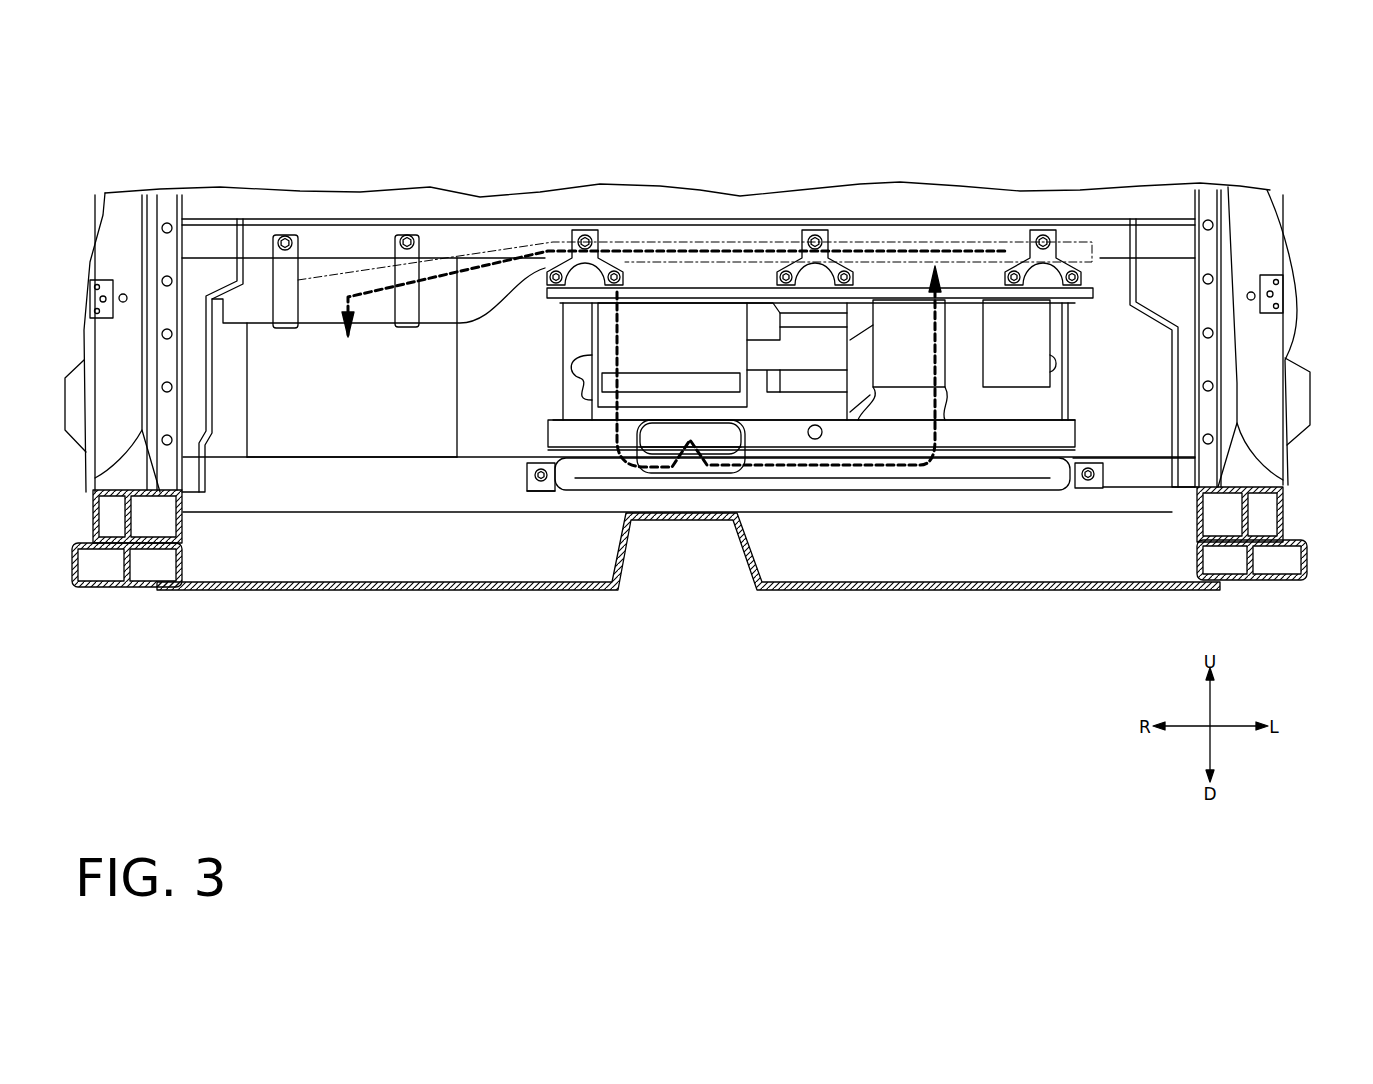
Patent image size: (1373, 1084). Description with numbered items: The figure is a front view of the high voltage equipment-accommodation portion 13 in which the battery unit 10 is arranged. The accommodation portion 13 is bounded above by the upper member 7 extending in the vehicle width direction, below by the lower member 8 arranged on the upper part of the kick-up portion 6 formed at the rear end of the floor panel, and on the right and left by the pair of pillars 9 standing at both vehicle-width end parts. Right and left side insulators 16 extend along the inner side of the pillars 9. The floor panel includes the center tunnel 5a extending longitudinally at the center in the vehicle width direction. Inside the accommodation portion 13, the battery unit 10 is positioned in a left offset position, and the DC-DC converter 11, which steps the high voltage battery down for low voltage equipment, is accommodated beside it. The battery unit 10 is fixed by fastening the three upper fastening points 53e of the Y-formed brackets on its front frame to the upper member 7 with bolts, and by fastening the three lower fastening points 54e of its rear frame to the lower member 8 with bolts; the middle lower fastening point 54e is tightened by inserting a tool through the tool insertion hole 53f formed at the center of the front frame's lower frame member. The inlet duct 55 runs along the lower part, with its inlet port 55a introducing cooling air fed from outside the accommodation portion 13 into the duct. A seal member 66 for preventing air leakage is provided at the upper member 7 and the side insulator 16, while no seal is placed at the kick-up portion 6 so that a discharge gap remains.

The pillar 9 is at (128, 210).
The side insulator 16 is at (200, 300).
The upper member 7 is at (443, 222).
The lower member 8 is at (215, 488).
The seal member 66 is at (1172, 413).
The DC-DC converter 11 is at (313, 438).
The kick-up portion 6 is at (386, 556).
The high voltage equipment-accommodation portion 13 is at (495, 440).
The center tunnel 5a is at (630, 556).
The upper fastening point 53e is at (588, 232).
The battery unit 10 is at (1078, 343).
The tool insertion hole 53f is at (824, 434).
The lower fastening point 54e is at (543, 482).
The inlet duct 55 is at (990, 488).
The inlet port 55a is at (738, 440).